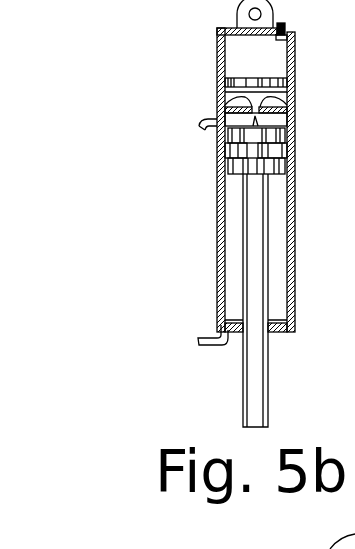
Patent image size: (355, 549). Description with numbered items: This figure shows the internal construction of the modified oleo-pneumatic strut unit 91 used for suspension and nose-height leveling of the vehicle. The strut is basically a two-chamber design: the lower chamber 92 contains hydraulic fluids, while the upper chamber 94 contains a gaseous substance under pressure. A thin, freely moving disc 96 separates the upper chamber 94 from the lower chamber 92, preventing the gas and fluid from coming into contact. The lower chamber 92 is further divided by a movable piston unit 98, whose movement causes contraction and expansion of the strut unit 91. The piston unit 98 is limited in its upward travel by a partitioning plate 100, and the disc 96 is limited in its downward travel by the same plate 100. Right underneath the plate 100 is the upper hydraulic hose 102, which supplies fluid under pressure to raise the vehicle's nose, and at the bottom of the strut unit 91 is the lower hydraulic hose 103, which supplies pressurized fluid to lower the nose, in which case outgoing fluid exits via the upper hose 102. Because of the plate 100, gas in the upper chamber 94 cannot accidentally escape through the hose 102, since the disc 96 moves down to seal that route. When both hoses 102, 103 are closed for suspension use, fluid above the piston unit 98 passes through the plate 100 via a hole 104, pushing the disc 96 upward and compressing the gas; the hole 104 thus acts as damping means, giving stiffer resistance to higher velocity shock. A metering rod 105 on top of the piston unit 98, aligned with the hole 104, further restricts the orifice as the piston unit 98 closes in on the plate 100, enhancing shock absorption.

The oleo-pneumatic strut unit 91 is at (178, 275).
The lower chamber 92 is at (233, 204).
The upper chamber 94 is at (237, 62).
The disc 96 is at (280, 83).
The piston unit 98 is at (268, 136).
The partitioning plate 100 is at (281, 107).
The upper hydraulic hose 102 is at (202, 118).
The lower hydraulic hose 103 is at (209, 348).
The hole 104 is at (218, 98).
The metering rod 105 is at (255, 117).